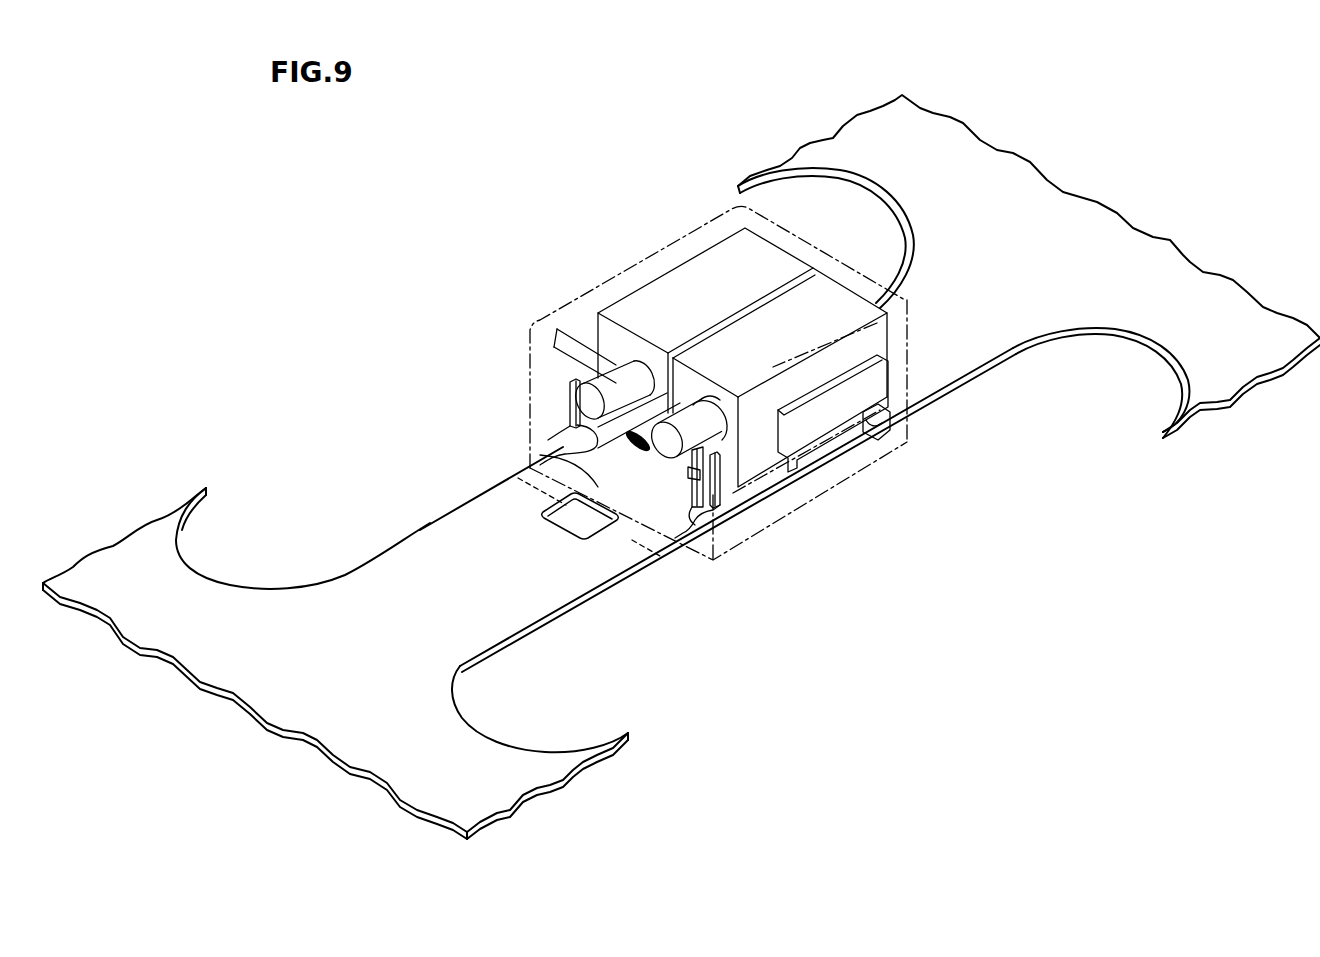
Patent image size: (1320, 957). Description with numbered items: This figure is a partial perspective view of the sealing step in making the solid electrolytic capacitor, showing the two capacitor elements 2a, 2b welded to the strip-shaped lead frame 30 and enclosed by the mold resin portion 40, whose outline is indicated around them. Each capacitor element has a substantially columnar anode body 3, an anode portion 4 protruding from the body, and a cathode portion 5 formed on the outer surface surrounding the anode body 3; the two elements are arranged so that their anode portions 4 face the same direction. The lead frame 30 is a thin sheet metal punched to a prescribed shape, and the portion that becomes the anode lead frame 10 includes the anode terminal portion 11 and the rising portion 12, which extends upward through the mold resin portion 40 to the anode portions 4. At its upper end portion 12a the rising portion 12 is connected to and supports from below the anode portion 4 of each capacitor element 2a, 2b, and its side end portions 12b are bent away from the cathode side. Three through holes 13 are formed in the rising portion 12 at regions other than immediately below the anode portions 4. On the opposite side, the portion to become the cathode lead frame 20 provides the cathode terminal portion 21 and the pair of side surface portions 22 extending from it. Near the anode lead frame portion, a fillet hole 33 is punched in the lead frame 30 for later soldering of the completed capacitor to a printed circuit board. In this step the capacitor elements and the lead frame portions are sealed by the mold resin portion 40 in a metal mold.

The capacitor element 2a is at (867, 556).
The capacitor element 2b is at (697, 186).
The anode body 3 is at (673, 297).
The anode portion 4 is at (621, 380).
The cathode portion 5 is at (727, 265).
The anode lead frame 10 is at (612, 460).
The anode terminal portion 11 is at (537, 463).
The rising portion 12 is at (627, 485).
The upper end portion 12a is at (707, 430).
The side end portion 12b is at (566, 402).
The through hole 13 is at (635, 445).
The cathode lead frame 20 is at (857, 443).
The cathode terminal portion 21 is at (893, 390).
The side surface portion 22 is at (862, 393).
The lead frame 30 is at (1073, 236).
The fillet hole 33 is at (608, 527).
The mold resin portion 40 is at (559, 306).